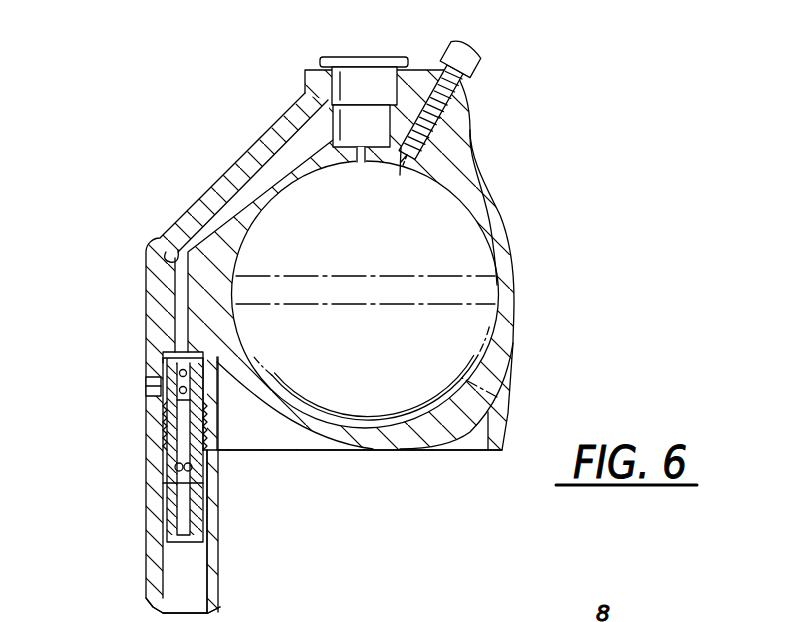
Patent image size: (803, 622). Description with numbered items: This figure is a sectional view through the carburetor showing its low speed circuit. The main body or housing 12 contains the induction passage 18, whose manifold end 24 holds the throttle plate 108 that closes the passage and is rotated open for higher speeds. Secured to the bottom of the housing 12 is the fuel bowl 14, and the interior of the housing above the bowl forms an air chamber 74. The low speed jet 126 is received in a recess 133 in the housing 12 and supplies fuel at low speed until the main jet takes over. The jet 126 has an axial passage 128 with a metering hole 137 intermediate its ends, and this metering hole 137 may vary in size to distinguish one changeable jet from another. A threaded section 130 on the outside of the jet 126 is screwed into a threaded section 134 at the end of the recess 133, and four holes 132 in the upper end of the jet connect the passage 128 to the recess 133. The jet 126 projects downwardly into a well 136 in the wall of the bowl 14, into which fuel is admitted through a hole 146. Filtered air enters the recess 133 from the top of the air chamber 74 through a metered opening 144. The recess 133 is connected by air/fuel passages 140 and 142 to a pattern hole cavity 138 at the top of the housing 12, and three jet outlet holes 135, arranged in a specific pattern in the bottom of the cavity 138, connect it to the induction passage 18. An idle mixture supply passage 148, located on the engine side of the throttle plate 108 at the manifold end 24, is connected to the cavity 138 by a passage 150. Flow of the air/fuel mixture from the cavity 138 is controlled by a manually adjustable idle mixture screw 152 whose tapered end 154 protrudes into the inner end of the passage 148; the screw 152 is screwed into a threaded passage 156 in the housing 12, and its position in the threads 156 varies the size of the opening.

The main body or housing 12 is at (146, 293).
The fuel bowl 14 is at (147, 507).
The induction passage 18 is at (469, 221).
The manifold end 24 is at (481, 316).
The air chamber 74 is at (270, 441).
The throttle plate 108 is at (497, 397).
The low speed jet 126 is at (208, 520).
The axial passage 128 is at (175, 366).
The threaded section 130 is at (160, 420).
The holes 132 is at (200, 356).
The recess 133 is at (147, 398).
The threaded section 134 is at (164, 448).
The jet outlet holes (pattern holes) 135 is at (363, 160).
The well 136 is at (172, 572).
The metering hole 137 is at (163, 483).
The pattern hole cavity 138 is at (357, 112).
The air/fuel passage 140 is at (146, 268).
The air/fuel passage 142 is at (262, 172).
The metered opening 144 is at (232, 377).
The hole 146 is at (215, 585).
The idle mixture supply passage 148 is at (401, 135).
The passage 150 is at (401, 158).
The idle mixture screw 152 is at (472, 50).
The tapered end 154 is at (430, 158).
The threaded passage 156 is at (462, 92).